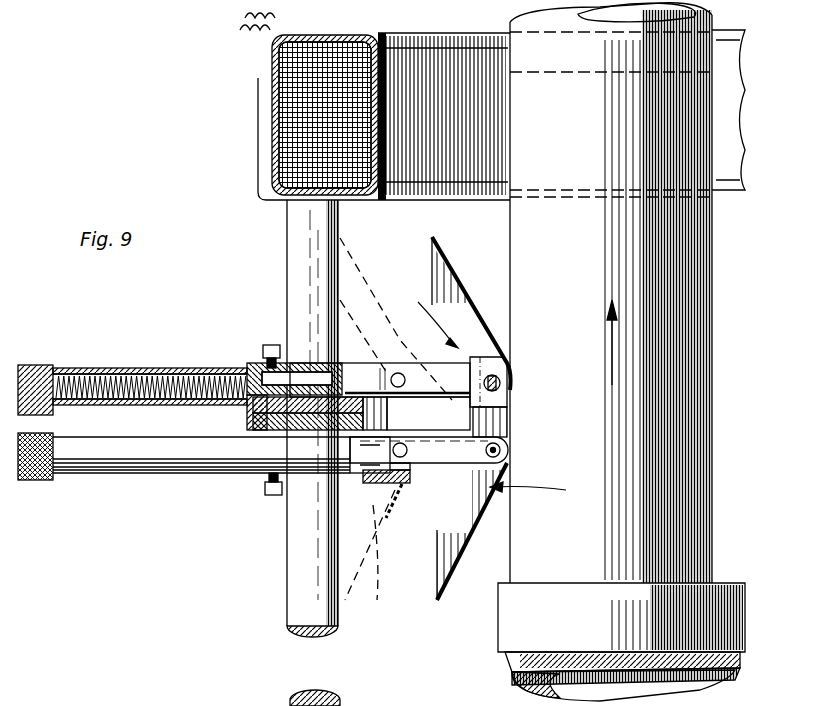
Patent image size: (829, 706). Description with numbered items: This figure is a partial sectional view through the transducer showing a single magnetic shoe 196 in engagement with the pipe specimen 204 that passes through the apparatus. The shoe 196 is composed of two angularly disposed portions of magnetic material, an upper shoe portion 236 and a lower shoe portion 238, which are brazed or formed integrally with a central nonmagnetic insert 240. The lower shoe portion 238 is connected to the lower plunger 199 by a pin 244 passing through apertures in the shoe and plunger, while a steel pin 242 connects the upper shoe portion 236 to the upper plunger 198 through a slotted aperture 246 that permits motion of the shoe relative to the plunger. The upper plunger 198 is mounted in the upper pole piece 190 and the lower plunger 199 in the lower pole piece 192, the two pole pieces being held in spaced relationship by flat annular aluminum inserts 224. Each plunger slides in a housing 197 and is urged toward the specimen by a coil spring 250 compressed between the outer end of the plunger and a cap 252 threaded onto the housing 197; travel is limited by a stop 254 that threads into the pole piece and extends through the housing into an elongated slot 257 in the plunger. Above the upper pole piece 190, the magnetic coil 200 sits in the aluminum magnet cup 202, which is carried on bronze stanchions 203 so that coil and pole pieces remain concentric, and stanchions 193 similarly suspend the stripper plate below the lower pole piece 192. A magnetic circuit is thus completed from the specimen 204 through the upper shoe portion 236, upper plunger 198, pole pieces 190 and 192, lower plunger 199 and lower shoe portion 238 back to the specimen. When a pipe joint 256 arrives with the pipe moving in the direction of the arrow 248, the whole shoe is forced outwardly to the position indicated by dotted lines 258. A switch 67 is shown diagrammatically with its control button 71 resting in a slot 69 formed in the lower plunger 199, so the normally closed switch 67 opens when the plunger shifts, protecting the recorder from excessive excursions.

The switch 67 is at (396, 494).
The slot 69 is at (428, 416).
The control button 71 is at (412, 466).
The upper pole piece 190 is at (250, 412).
The lower pole piece 192 is at (262, 480).
The stanchions 193 is at (310, 588).
The magnetic shoe 196 is at (493, 392).
The housing 197 is at (112, 368).
The upper plunger 198 is at (446, 372).
The lower plunger 199 is at (478, 470).
The magnetic coil 200 is at (326, 52).
The aluminum support (magnet cup) 202 is at (262, 142).
The bronze stanchions 203 is at (302, 262).
The specimen 204 is at (627, 293).
The annular aluminum inserts 224 is at (388, 420).
The upper shoe portion 236 is at (466, 308).
The lower shoe portion 238 is at (465, 543).
The central nonmagnetic insert 240 is at (508, 422).
The steel pin 242 is at (500, 385).
The pin 244 is at (510, 457).
The slotted aperture 246 is at (495, 378).
The arrow 248 is at (614, 350).
The coil spring 250 is at (156, 368).
The cap 252 is at (28, 365).
The stop 254 is at (270, 345).
The pipe joint 256 is at (498, 632).
The elongated slot 257 is at (294, 361).
The dotted lines 258 is at (372, 600).